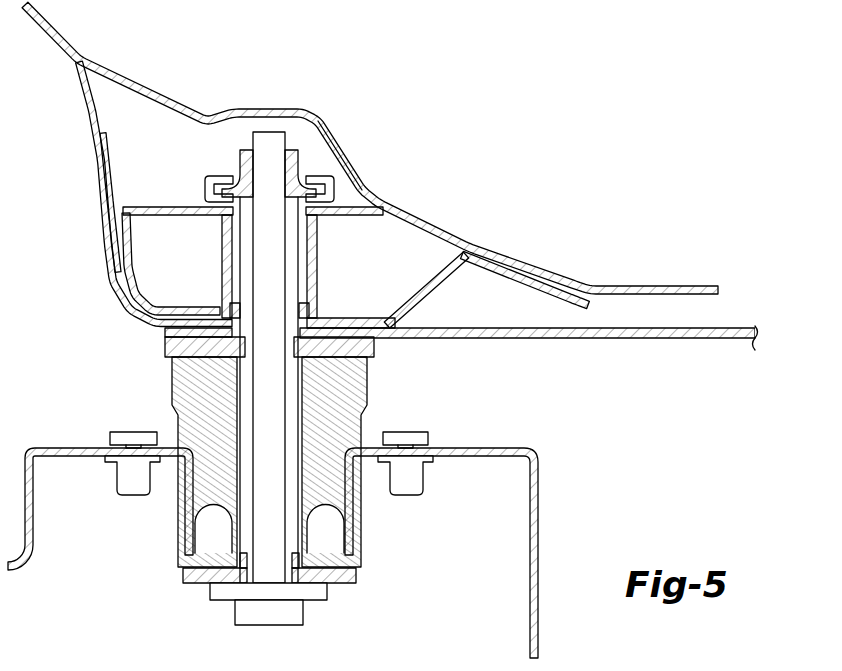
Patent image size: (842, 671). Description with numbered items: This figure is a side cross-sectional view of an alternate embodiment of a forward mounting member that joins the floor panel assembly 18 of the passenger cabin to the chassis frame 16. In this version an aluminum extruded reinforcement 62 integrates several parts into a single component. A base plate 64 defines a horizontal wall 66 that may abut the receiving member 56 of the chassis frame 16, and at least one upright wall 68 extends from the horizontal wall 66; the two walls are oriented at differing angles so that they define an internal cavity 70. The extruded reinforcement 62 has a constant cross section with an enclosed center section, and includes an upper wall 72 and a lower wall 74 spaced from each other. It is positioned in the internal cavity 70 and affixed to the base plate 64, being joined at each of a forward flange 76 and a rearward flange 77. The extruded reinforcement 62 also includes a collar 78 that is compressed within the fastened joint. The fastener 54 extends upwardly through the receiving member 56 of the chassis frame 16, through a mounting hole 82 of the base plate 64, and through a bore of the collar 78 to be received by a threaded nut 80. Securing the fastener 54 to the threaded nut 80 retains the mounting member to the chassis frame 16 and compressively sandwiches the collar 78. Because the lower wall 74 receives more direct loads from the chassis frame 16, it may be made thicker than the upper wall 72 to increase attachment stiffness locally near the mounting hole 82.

The chassis frame 16 is at (540, 505).
The floor panel assembly 18 is at (123, 72).
The fastener 54 is at (267, 131).
The receiving member 56 is at (167, 350).
The aluminum extruded reinforcement 62 is at (380, 210).
The base plate 64 is at (446, 292).
The horizontal wall 66 is at (375, 334).
The upright wall 68 is at (107, 207).
The internal cavity 70 is at (153, 262).
The upper wall 72 is at (168, 204).
The lower wall 74 is at (352, 314).
The forward flange 76 is at (107, 160).
The rearward flange 77 is at (508, 265).
The collar 78 is at (322, 252).
The threaded nut 80 is at (300, 157).
The mounting hole 82 is at (234, 308).